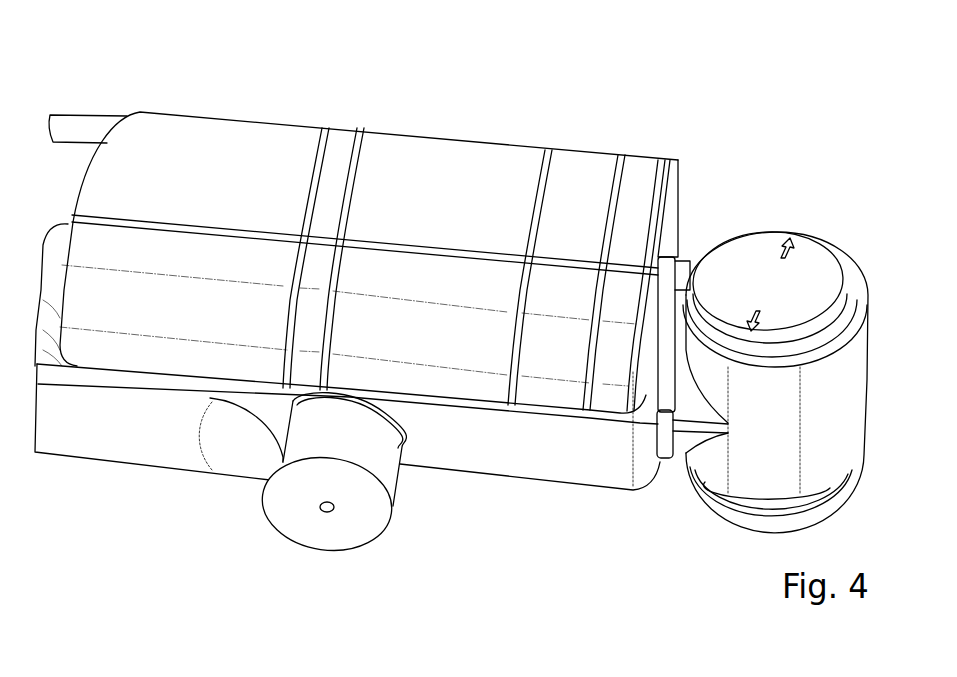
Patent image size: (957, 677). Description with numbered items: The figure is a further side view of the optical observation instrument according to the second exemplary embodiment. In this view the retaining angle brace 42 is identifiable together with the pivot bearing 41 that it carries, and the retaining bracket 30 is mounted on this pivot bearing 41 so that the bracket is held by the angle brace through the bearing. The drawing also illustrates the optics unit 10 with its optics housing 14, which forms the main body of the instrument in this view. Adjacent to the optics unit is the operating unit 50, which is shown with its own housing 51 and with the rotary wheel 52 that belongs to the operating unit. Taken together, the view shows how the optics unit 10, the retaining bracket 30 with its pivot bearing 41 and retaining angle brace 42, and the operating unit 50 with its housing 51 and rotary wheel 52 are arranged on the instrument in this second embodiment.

The optics unit 10 is at (453, 99).
The optics housing 14 is at (343, 138).
The retaining bracket 30 is at (527, 457).
The pivot bearing 41 is at (322, 530).
The retaining angle brace 42 is at (142, 443).
The operating unit 50 is at (797, 185).
The housing 51 is at (837, 450).
The rotary wheel 52 is at (763, 252).